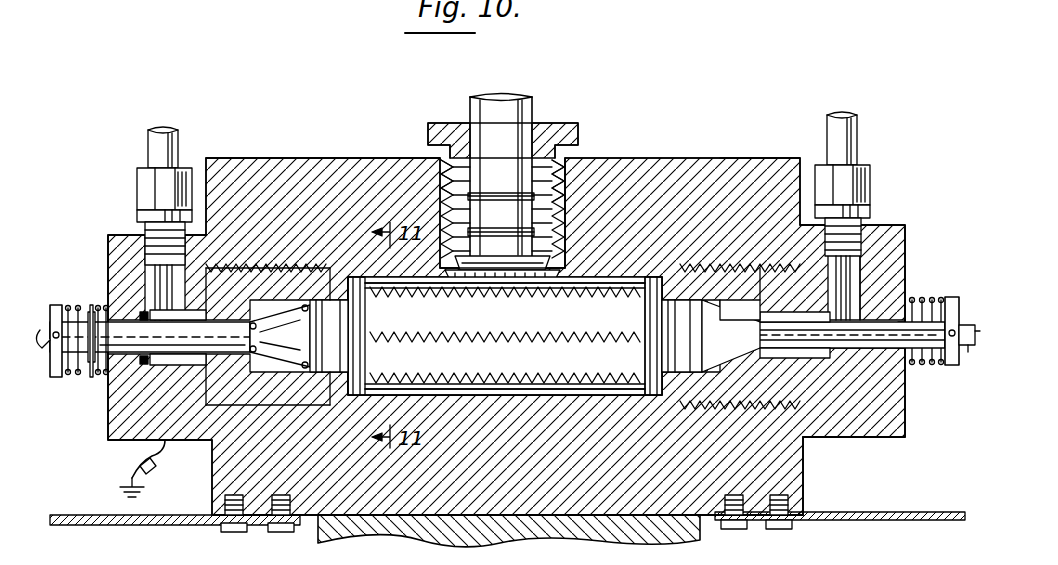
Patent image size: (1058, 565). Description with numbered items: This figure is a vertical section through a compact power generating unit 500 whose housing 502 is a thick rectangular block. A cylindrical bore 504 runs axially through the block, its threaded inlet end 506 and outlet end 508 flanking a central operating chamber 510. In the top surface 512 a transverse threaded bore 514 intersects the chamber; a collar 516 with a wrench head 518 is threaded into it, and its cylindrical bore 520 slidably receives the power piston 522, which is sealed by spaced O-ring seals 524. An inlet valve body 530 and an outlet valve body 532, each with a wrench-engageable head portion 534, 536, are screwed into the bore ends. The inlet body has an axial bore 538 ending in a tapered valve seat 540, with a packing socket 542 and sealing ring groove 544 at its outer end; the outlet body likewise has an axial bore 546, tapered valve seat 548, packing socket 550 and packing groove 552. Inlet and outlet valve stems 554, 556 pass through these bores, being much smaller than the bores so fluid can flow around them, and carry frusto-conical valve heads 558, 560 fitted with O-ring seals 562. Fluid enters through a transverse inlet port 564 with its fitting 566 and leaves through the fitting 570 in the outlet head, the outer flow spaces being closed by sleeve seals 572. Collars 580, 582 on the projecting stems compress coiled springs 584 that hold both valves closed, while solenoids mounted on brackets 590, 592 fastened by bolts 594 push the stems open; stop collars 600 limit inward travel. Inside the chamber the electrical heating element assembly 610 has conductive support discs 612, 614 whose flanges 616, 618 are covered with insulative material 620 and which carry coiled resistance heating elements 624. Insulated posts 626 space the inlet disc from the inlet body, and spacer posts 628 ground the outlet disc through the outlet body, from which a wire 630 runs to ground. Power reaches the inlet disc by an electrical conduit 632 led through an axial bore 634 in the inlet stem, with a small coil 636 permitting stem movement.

The power generating unit 500 is at (712, 142).
The housing 502 is at (330, 185).
The cylindrical bore 504 is at (533, 388).
The inlet end 506 is at (720, 425).
The outlet end 508 is at (300, 405).
The operating chamber 510 is at (474, 392).
The top surface 512 is at (270, 158).
The threaded bore 514 is at (560, 178).
The collar 516 is at (442, 180).
The wrench head 518 is at (578, 125).
The cylindrical bore 520 is at (480, 140).
The power piston 522 is at (515, 97).
The O-ring seals 524 is at (468, 196).
The inlet valve body 530 is at (720, 266).
The outlet valve body 532 is at (255, 268).
The head portion 534 is at (870, 230).
The head portion 536 is at (115, 245).
The axial bore 538 is at (850, 380).
The tapered valve seat 540 is at (860, 520).
The packing socket 542 is at (870, 437).
The annular sealing ring groove 544 is at (870, 285).
The axial bore 546 is at (220, 345).
The tapered valve seat 548 is at (320, 345).
The packing socket 550 is at (108, 318).
The annular packing groove 552 is at (160, 365).
The inlet operating valve stem 554 is at (800, 322).
The outlet operating valve stem 556 is at (222, 322).
The valve head 558 is at (666, 280).
The valve head 560 is at (455, 318).
The O-ring seals 562 is at (712, 350).
The transverse inlet port 564 is at (805, 270).
The fitting 566 is at (850, 150).
The fitting 570 is at (140, 195).
The sleeve seals 572 is at (860, 390).
The collar 580 is at (950, 300).
The collar 582 is at (98, 310).
The coiled springs 584 is at (925, 372).
The bracket 590 is at (509, 531).
The bracket 592 is at (120, 525).
The bolts 594 is at (779, 529).
The stop collars 600 is at (920, 365).
The electrical heating element assembly 610 is at (565, 270).
The support disc 612 is at (645, 355).
The support disc 614 is at (362, 340).
The flange 616 is at (645, 318).
The flange 618 is at (455, 258).
The insulative material 620 is at (585, 285).
The coiled resistance heating elements 624 is at (458, 340).
The insulated posts 626 is at (718, 408).
The spacer posts 628 is at (350, 395).
The wire 630 is at (138, 462).
The electrical conduit 632 is at (760, 340).
The axial bore 634 is at (818, 348).
The small coil 636 is at (658, 395).